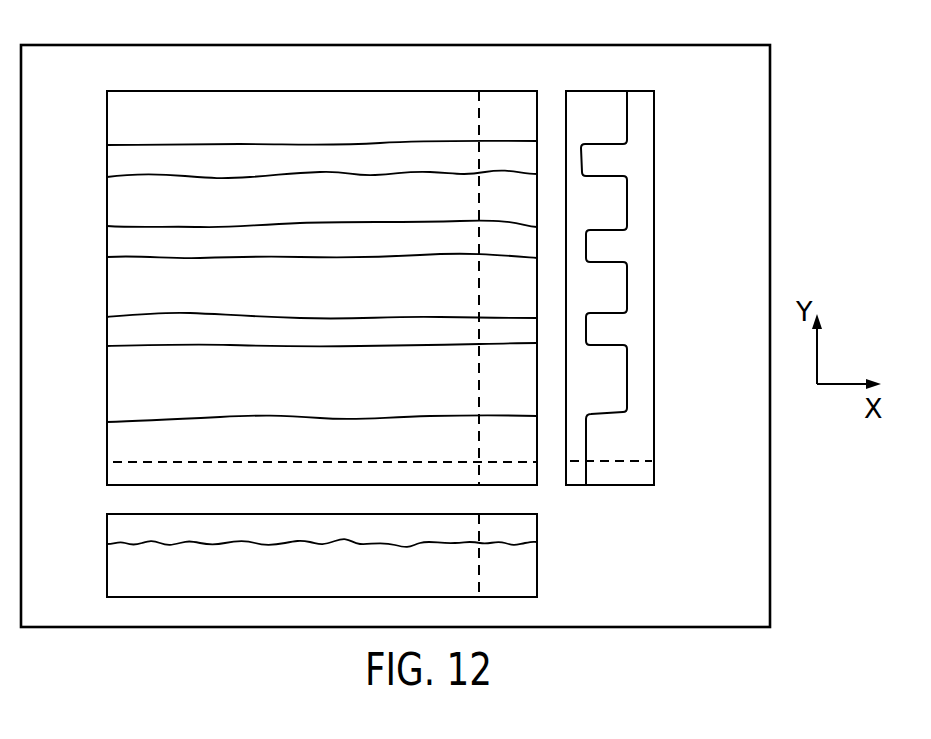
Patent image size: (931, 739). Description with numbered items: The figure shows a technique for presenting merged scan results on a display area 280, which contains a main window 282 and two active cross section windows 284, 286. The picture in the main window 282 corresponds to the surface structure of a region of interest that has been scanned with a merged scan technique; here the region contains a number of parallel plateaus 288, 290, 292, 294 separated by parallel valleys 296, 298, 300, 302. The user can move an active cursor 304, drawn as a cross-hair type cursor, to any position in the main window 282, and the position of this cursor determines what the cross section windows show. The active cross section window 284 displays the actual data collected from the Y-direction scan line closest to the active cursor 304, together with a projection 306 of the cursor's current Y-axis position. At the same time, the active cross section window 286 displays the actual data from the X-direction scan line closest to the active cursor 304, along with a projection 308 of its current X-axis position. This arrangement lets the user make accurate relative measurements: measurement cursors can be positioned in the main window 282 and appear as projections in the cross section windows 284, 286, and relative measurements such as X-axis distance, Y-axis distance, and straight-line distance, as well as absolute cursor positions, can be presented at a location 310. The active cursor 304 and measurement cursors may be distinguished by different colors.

The display area 280 is at (703, 36).
The main window 282 is at (523, 91).
The active cross section window 284 is at (654, 91).
The active cross section window 286 is at (537, 597).
The plateau 288 is at (251, 173).
The plateau 290 is at (251, 253).
The plateau 292 is at (251, 342).
The plateau 294 is at (297, 455).
The valley 296 is at (200, 136).
The valley 298 is at (200, 217).
The valley 300 is at (200, 304).
The valley 302 is at (200, 407).
The active cursor 304 is at (477, 460).
The projection 306 is at (628, 460).
The projection 308 is at (485, 568).
The location 310 is at (627, 541).